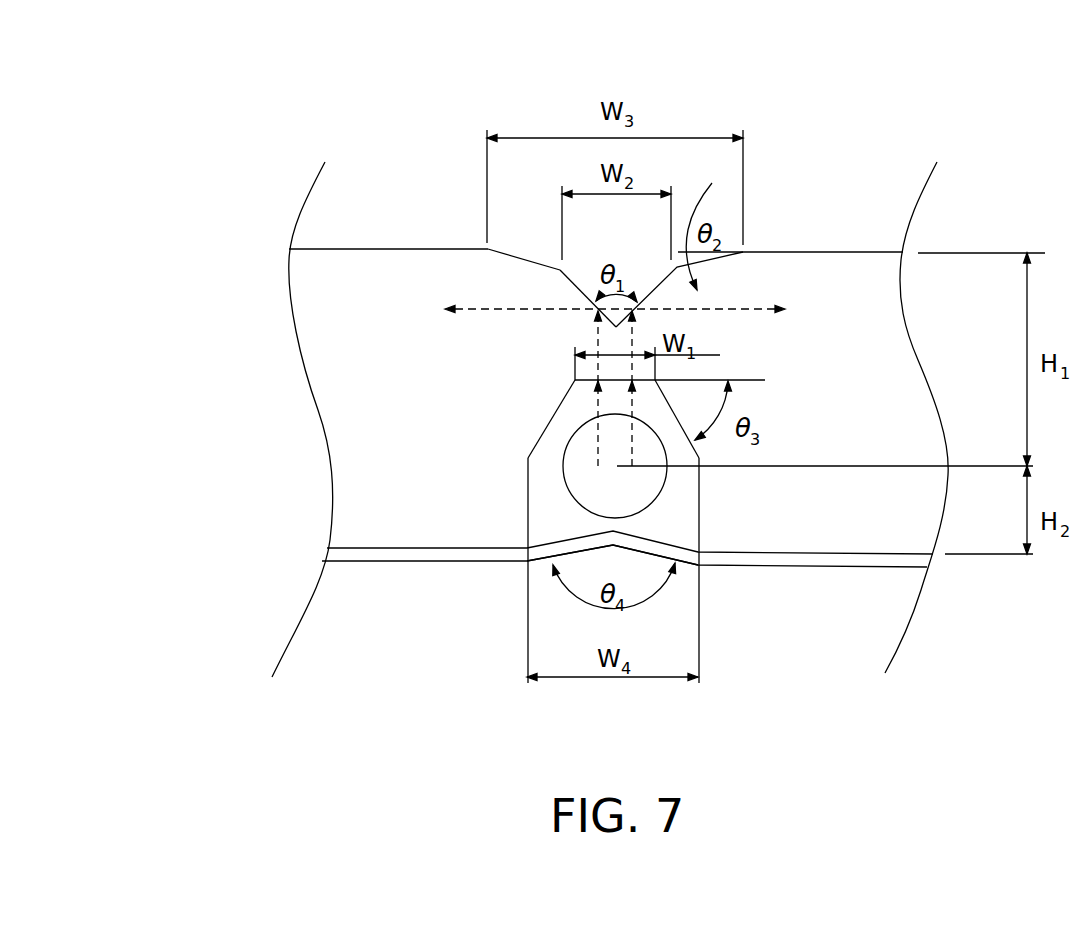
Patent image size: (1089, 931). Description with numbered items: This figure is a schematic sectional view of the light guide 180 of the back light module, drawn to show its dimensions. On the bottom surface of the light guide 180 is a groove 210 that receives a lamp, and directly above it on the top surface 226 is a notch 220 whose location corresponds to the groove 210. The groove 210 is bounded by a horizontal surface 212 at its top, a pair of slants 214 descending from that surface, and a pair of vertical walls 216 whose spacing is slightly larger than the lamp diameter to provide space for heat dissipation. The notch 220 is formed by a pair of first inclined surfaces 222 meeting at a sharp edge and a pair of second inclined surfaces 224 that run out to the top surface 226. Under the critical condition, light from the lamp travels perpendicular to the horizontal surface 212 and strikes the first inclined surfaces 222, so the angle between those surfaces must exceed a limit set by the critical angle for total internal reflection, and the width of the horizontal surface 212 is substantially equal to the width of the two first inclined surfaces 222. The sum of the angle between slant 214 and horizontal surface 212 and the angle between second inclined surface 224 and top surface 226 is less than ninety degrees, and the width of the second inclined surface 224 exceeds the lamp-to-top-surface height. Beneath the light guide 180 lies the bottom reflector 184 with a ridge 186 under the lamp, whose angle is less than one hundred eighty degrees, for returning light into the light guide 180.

The light guide 180 is at (327, 300).
The bottom reflector 184 is at (423, 562).
The ridge 186 is at (613, 546).
The groove 210 is at (666, 532).
The horizontal surface 212 is at (612, 378).
The slant 214 is at (553, 415).
The vertical wall 216 is at (527, 505).
The notch 220 is at (637, 293).
The first inclined surface 222 is at (576, 287).
The second inclined surface 224 is at (522, 258).
The top surface 226 is at (388, 249).